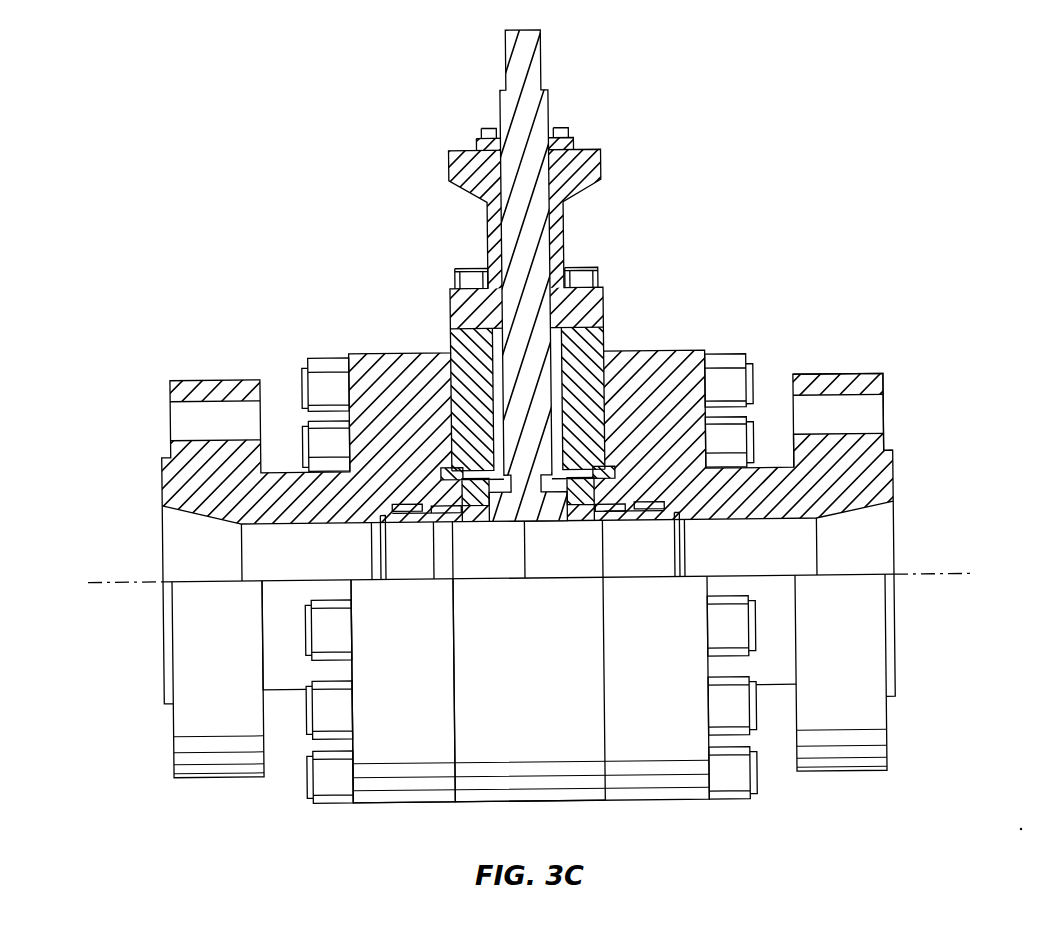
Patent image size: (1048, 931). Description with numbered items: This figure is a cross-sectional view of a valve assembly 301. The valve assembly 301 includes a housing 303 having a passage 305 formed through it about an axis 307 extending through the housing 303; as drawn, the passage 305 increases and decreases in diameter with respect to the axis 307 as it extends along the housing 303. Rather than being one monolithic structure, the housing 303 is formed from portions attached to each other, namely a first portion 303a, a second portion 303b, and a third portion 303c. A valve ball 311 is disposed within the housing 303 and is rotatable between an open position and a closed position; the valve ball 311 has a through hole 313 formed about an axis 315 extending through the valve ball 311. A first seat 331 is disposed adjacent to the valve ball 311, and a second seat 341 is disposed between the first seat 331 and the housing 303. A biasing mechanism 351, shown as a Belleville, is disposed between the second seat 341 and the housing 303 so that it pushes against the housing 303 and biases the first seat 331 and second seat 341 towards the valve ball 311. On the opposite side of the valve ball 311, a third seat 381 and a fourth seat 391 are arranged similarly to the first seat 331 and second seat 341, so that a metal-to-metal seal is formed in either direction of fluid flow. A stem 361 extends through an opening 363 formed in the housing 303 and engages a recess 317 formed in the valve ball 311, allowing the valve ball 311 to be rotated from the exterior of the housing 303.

The valve assembly 301 is at (766, 207).
The housing 303 is at (403, 350).
The first portion 303a is at (404, 802).
The second portion 303b is at (533, 801).
The third portion 303c is at (845, 775).
The passage 305 is at (880, 537).
The axis 307 is at (115, 578).
The valve ball 311 is at (527, 518).
The through hole 313 is at (542, 562).
The axis 315 is at (946, 578).
The recess 317 is at (548, 474).
The first seat 331 is at (447, 568).
The second seat 341 is at (411, 512).
The biasing mechanism 351 is at (371, 541).
The stem 361 is at (547, 62).
The opening 363 is at (608, 385).
The third seat 381 is at (615, 511).
The fourth seat 391 is at (647, 520).